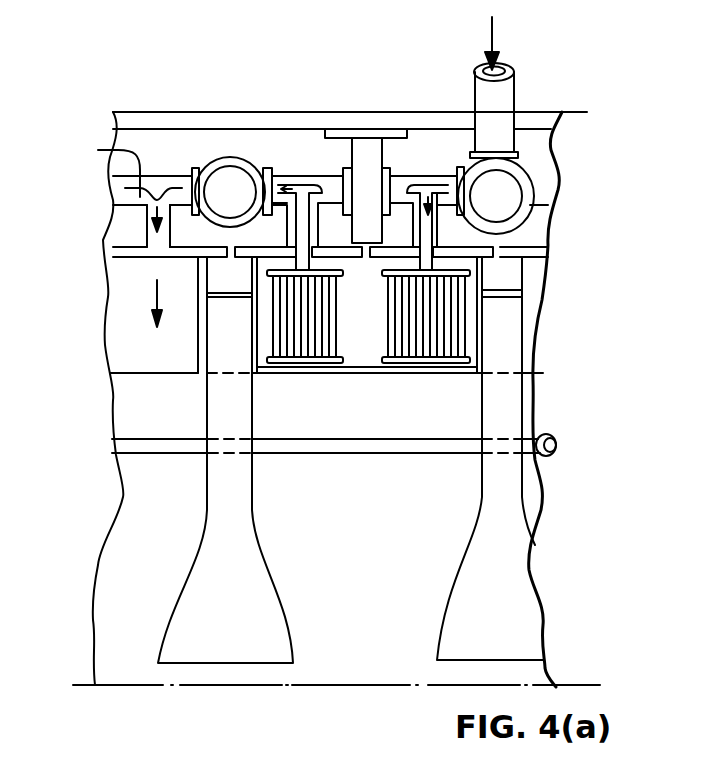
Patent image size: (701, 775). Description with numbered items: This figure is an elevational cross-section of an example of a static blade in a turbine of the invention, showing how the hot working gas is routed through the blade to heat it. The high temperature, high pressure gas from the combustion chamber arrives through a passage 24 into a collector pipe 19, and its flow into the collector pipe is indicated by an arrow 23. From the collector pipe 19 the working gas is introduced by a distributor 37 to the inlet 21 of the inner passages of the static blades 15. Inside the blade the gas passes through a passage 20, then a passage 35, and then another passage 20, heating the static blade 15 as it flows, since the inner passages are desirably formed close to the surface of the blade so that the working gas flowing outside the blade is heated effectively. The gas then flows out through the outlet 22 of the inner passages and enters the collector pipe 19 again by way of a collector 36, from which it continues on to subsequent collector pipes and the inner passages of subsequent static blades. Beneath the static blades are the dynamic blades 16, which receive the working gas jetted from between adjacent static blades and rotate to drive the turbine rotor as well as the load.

The static blade 15 is at (113, 297).
The dynamic blade 16 is at (224, 357).
The collector pipe 19 is at (262, 165).
The passage 20 is at (447, 323).
The inlet 21 is at (427, 238).
The outlet 22 is at (300, 242).
The arrow 23 is at (508, 37).
The passage 24 is at (516, 100).
The passage 35 is at (408, 358).
The collector 36 is at (328, 188).
The distributor 37 is at (157, 176).